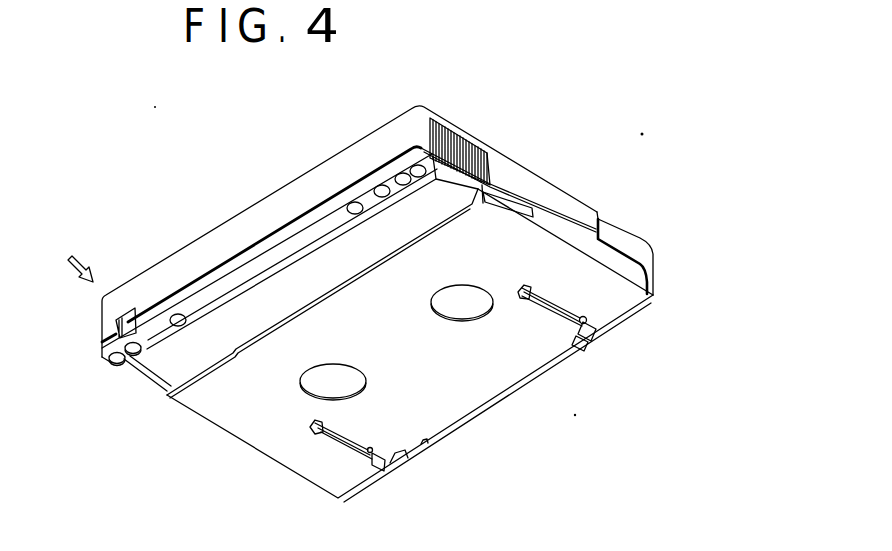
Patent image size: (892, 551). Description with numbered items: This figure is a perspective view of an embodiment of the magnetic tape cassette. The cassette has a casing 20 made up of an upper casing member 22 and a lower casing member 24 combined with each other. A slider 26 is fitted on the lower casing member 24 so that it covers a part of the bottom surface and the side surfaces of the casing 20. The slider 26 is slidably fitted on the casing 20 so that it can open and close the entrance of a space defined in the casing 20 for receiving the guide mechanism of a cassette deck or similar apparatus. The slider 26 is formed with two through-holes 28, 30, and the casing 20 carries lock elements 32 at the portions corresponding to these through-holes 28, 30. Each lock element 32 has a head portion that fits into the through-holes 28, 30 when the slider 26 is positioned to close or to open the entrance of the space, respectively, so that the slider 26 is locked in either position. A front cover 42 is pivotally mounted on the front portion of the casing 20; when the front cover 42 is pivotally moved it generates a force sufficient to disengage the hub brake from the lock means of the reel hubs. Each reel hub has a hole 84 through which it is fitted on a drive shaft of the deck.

The casing 20 is at (68, 258).
The upper casing member 22 is at (152, 276).
The lower casing member 24 is at (107, 362).
The slider 26 is at (551, 226).
The through-hole 28 is at (320, 430).
The through-hole 30 is at (584, 316).
The lock element 32 is at (553, 308).
The front cover 42 is at (628, 236).
The hole of the reel hub 84 is at (431, 302).